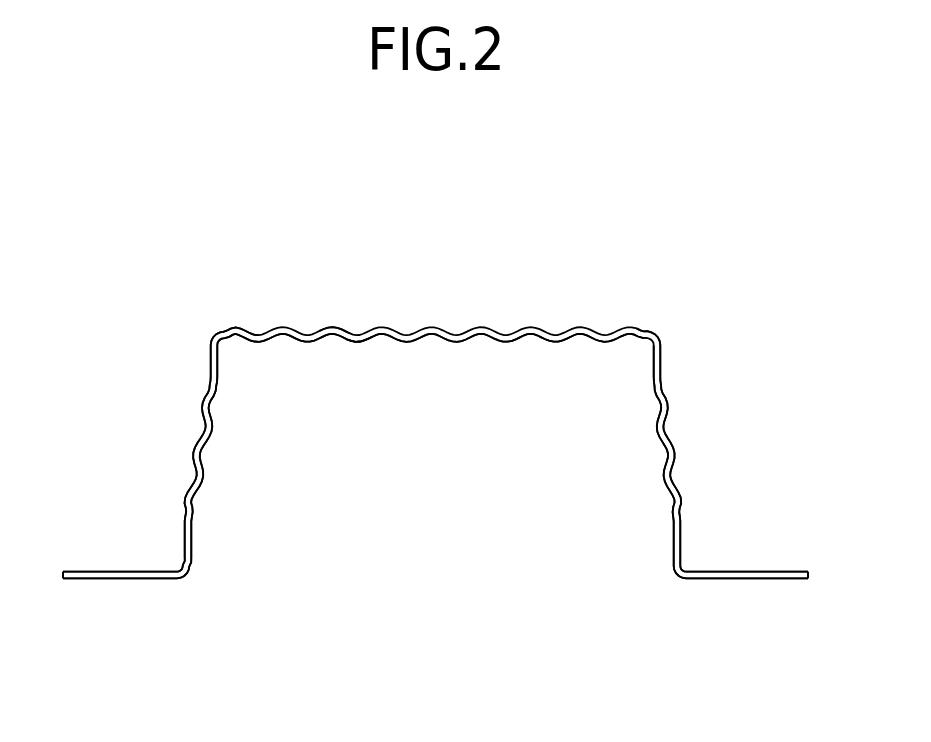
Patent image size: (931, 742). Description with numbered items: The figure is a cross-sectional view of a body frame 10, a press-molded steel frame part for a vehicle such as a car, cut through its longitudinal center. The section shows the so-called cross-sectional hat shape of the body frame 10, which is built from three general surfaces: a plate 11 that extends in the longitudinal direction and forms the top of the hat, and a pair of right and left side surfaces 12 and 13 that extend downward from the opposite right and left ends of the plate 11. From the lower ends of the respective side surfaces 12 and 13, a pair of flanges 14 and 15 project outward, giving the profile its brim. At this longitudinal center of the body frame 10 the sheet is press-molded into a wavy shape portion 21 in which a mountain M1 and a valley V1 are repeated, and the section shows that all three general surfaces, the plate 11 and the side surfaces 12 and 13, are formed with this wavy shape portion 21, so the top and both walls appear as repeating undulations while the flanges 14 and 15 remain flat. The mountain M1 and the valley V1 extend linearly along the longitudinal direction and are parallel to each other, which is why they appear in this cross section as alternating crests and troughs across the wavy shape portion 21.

The body frame 10 is at (260, 154).
The plate 11 is at (232, 296).
The wavy shape portion 21 is at (394, 298).
The mountain M1 is at (334, 322).
The valley V1 is at (360, 346).
The side surface 13 is at (175, 407).
The side surface 12 is at (692, 402).
The flange 15 is at (104, 563).
The flange 14 is at (763, 558).